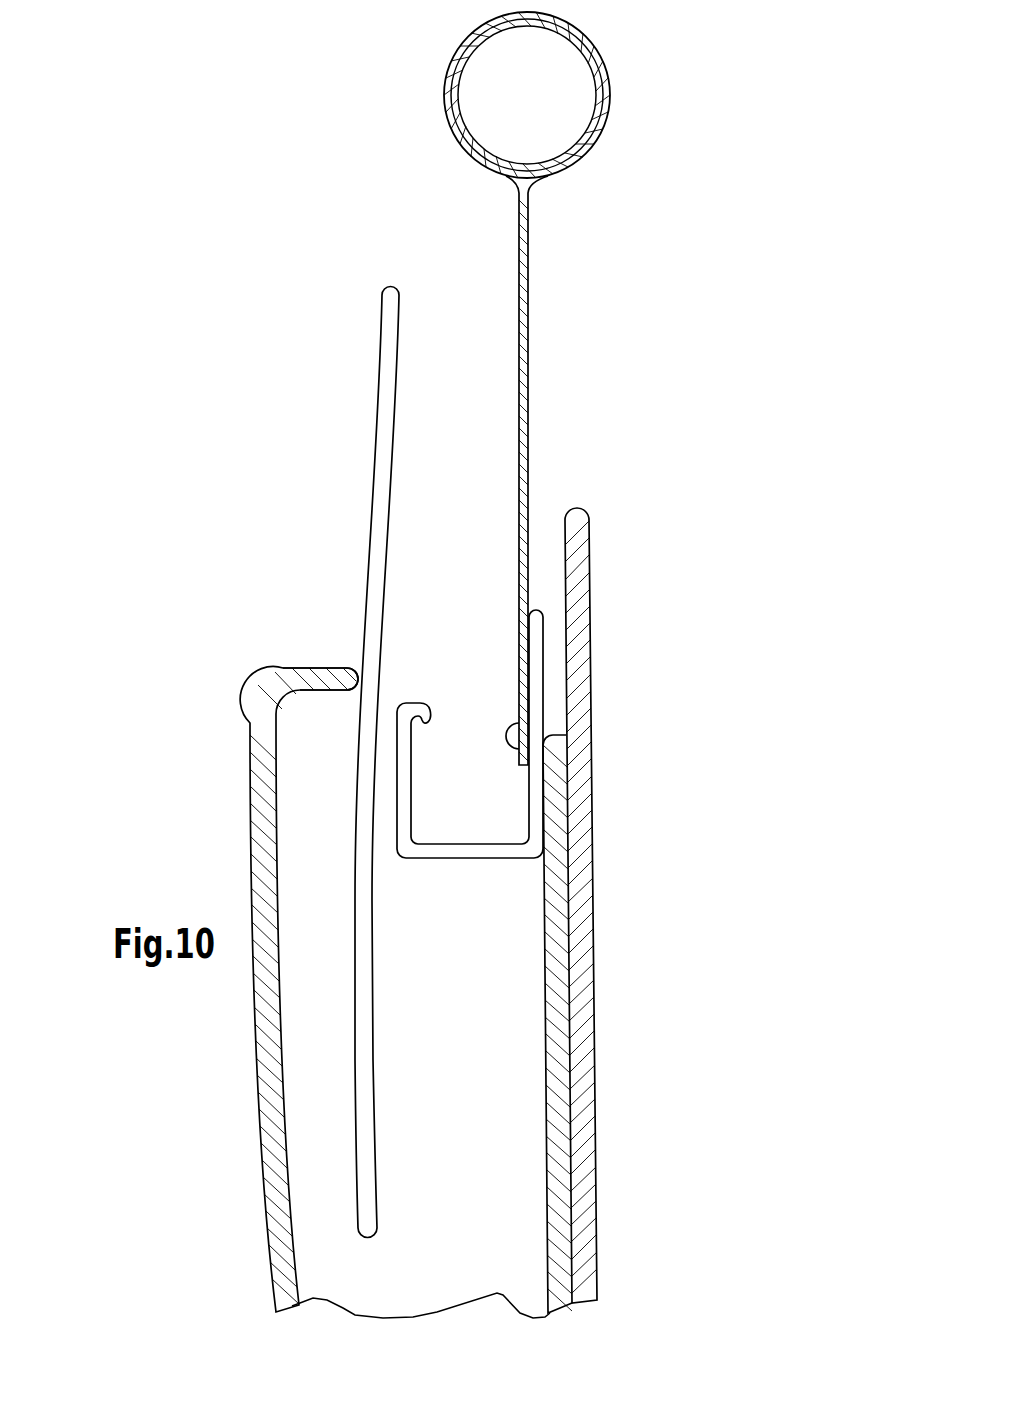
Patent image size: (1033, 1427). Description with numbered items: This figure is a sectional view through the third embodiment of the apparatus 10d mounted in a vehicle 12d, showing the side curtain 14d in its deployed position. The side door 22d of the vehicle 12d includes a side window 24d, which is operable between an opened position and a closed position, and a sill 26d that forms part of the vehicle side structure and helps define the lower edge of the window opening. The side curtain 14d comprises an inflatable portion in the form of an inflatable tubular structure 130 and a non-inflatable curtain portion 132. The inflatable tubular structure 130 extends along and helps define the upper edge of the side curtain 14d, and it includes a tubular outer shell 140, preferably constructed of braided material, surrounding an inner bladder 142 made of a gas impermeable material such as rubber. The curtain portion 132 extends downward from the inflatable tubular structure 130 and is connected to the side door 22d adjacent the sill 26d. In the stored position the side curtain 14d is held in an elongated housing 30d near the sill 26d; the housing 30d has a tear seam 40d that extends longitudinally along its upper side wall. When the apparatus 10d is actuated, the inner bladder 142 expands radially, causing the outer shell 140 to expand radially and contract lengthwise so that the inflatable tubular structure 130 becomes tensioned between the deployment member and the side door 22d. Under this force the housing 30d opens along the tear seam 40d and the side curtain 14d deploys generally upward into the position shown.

The apparatus 10d is at (672, 500).
The vehicle 12d is at (261, 800).
The side curtain 14d is at (567, 470).
The side door 22d is at (259, 962).
The side window 24d is at (385, 418).
The sill 26d is at (330, 678).
The housing 30d is at (470, 781).
The tear seam 40d is at (430, 712).
The inflatable tubular structure 130 is at (546, 90).
The curtain portion 132 is at (527, 287).
The outer shell 140 is at (478, 28).
The inner bladder 142 is at (452, 118).